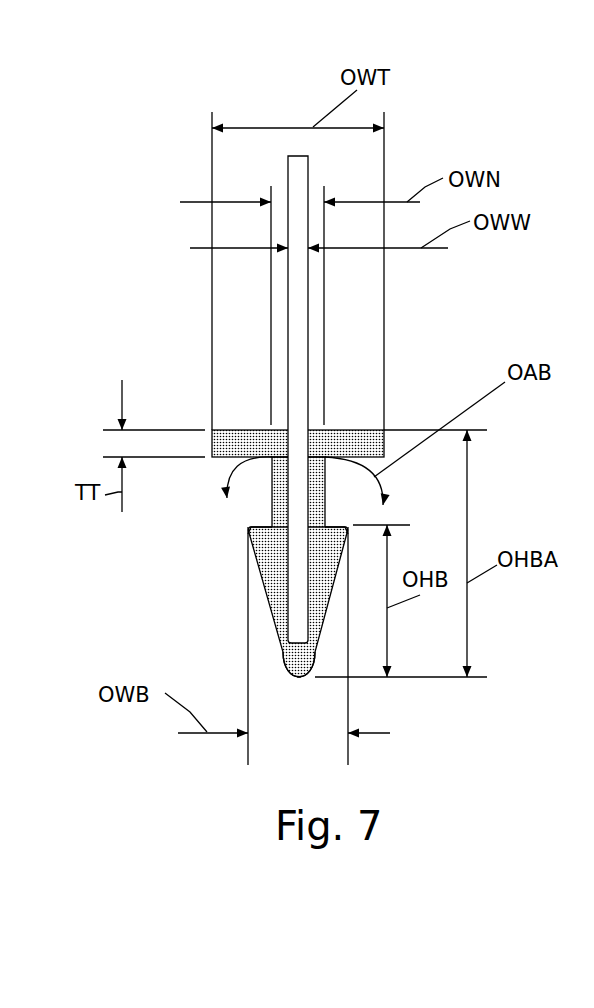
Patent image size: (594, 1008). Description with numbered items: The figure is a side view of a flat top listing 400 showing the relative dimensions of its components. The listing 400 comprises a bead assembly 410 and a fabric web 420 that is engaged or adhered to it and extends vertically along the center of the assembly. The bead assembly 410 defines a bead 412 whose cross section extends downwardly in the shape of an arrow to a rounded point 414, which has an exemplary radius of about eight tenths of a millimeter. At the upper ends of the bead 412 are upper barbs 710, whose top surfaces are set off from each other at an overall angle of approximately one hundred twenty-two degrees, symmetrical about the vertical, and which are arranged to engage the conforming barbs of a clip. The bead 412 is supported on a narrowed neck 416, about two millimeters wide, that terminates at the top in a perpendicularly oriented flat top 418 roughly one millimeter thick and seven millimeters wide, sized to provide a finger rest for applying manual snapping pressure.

The flat top listing 400 is at (203, 377).
The bead assembly 410 is at (257, 580).
The bead 412 is at (222, 658).
The rounded point 414 is at (300, 678).
The neck 416 is at (270, 495).
The flat top 418 is at (372, 440).
The fabric web 420 is at (311, 172).
The upper barbs 710 is at (253, 528).